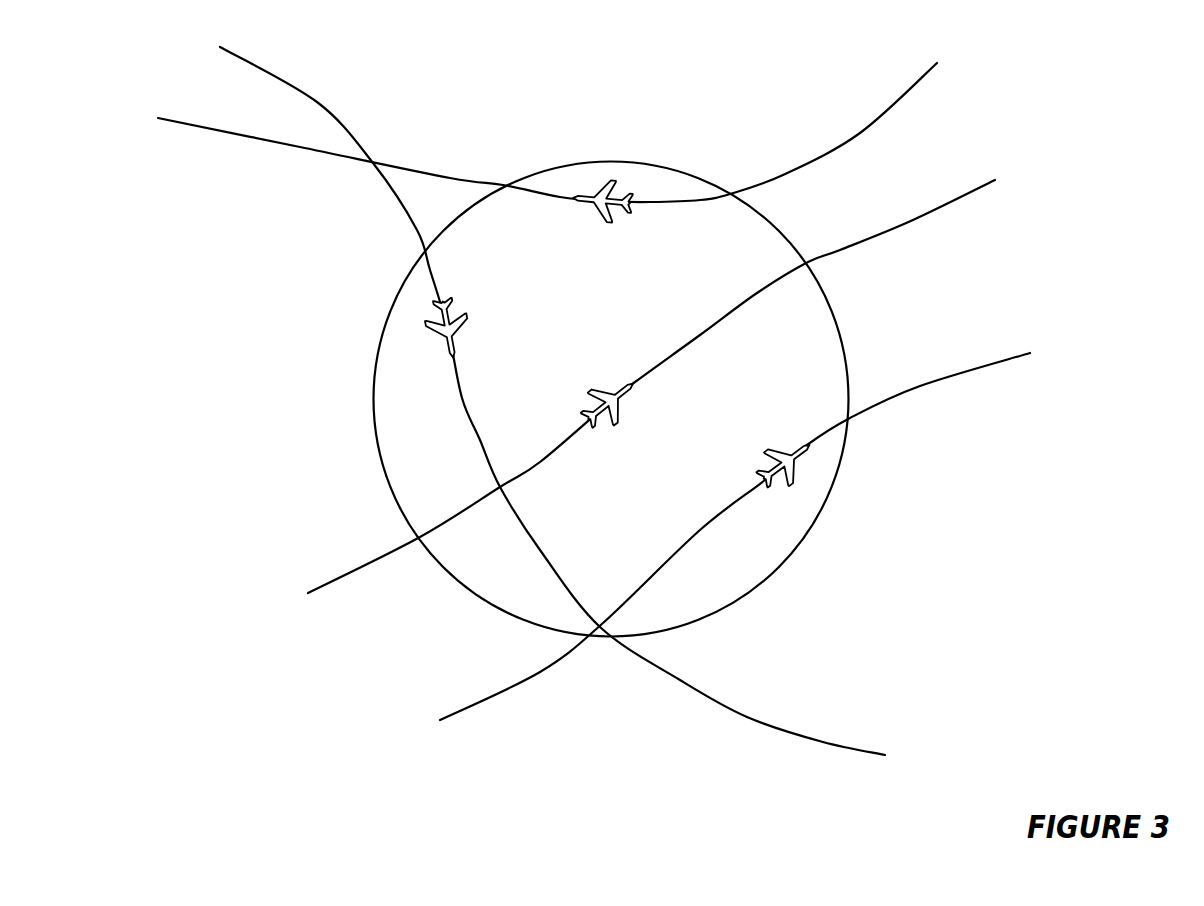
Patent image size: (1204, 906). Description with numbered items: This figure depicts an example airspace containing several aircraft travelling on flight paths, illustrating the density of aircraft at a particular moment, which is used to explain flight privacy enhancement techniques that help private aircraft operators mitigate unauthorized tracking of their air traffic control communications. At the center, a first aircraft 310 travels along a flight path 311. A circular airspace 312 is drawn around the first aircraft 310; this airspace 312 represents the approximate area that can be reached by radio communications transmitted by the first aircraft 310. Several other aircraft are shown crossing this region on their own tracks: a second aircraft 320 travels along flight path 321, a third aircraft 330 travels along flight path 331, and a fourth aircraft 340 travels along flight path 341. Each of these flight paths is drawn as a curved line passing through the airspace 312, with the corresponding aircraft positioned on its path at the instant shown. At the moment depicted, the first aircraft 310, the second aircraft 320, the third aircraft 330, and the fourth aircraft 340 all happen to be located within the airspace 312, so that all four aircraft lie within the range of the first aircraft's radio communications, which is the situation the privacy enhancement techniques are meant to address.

The first aircraft 310 is at (617, 383).
The flight path 311 is at (957, 193).
The airspace 312 is at (376, 400).
The second aircraft 320 is at (782, 443).
The flight path 321 is at (920, 383).
The third aircraft 330 is at (465, 331).
The flight path 331 is at (823, 740).
The fourth aircraft 340 is at (600, 217).
The flight path 341 is at (782, 175).